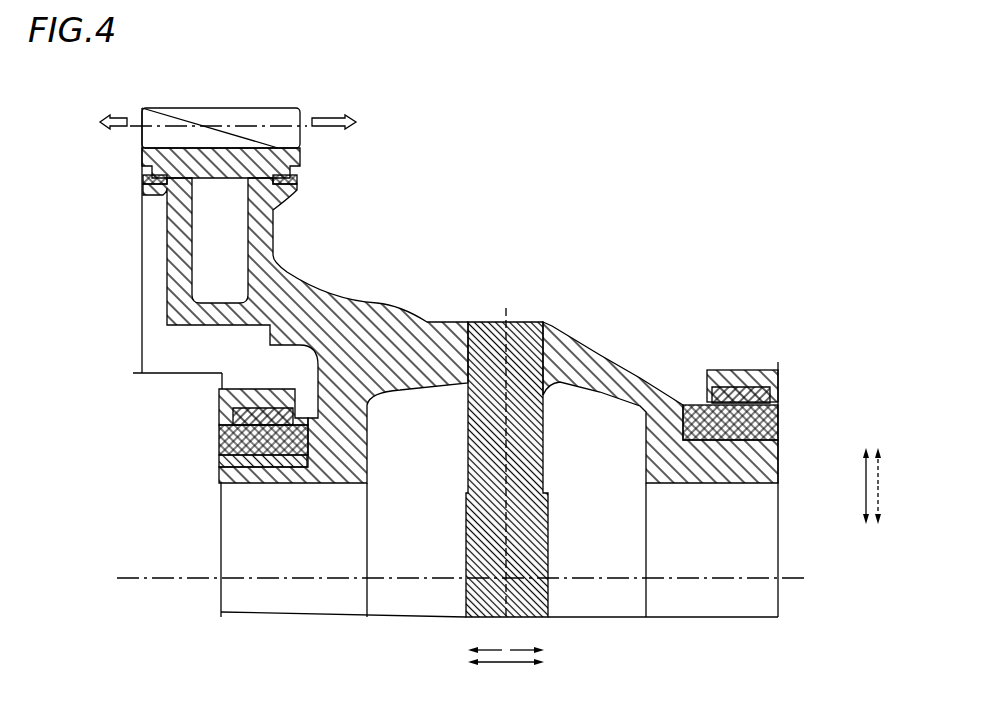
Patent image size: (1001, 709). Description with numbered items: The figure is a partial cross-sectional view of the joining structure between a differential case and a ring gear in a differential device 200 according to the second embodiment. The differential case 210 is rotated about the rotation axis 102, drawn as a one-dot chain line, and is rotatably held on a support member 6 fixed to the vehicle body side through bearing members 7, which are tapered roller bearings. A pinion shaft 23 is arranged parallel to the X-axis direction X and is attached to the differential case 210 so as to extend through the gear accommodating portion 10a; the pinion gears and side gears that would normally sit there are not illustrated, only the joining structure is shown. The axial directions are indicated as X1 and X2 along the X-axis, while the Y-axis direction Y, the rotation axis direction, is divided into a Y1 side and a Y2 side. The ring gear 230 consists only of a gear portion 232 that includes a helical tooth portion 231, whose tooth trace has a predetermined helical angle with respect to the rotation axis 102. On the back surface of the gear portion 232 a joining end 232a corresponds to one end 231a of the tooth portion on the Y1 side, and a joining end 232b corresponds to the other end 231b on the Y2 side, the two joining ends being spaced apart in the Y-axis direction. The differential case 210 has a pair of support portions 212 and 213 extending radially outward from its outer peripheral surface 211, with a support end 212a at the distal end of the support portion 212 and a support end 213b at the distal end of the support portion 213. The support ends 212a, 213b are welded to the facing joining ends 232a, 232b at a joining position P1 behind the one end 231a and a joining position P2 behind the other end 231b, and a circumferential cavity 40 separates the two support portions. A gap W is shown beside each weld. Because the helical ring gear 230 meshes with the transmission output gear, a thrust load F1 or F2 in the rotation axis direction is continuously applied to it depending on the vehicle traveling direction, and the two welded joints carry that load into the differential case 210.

The ring gear 230 is at (236, 114).
The helical tooth portion 231 is at (206, 104).
The one end 231a is at (292, 115).
The other end 231b is at (148, 117).
The gear portion 232 is at (141, 147).
The joining end 232a is at (300, 168).
The joining end 232b is at (145, 167).
The joining position P1 is at (302, 180).
The joining position P2 is at (139, 180).
The gap width W is at (165, 195).
The thrust load F1 is at (334, 109).
The thrust load F2 is at (118, 109).
The differential case 210 is at (600, 362).
The outer peripheral surface 211 is at (430, 322).
The support portion 212 is at (262, 228).
The support end 212a is at (282, 203).
The support portion 213 is at (180, 226).
The support end 213b is at (162, 198).
The gear accommodating portion 10a is at (616, 405).
The pinion shaft 23 is at (568, 385).
The circumferential cavity 40 is at (218, 308).
The differential device 200 is at (832, 201).
The support member 6 is at (219, 404).
The bearing members 7 is at (219, 444).
The rotation axis 102 is at (128, 575).
The X-axis direction X is at (854, 486).
The first axial direction X1 is at (898, 467).
The second axial direction X2 is at (898, 504).
The Y-axis direction Y is at (506, 675).
The Y1 side Y1 is at (527, 636).
The Y2 side Y2 is at (486, 636).